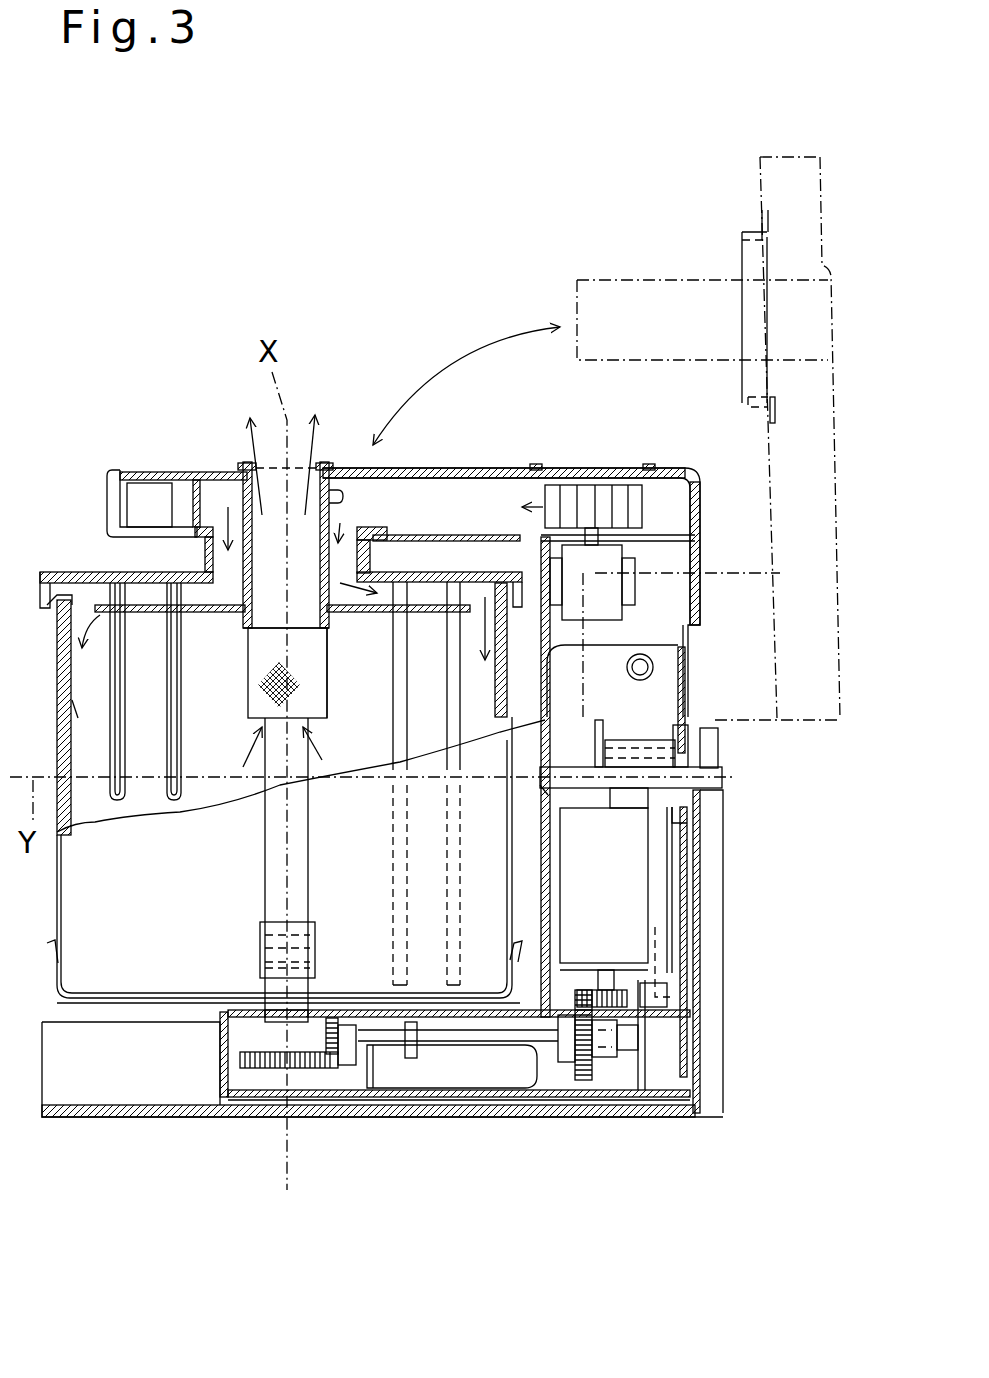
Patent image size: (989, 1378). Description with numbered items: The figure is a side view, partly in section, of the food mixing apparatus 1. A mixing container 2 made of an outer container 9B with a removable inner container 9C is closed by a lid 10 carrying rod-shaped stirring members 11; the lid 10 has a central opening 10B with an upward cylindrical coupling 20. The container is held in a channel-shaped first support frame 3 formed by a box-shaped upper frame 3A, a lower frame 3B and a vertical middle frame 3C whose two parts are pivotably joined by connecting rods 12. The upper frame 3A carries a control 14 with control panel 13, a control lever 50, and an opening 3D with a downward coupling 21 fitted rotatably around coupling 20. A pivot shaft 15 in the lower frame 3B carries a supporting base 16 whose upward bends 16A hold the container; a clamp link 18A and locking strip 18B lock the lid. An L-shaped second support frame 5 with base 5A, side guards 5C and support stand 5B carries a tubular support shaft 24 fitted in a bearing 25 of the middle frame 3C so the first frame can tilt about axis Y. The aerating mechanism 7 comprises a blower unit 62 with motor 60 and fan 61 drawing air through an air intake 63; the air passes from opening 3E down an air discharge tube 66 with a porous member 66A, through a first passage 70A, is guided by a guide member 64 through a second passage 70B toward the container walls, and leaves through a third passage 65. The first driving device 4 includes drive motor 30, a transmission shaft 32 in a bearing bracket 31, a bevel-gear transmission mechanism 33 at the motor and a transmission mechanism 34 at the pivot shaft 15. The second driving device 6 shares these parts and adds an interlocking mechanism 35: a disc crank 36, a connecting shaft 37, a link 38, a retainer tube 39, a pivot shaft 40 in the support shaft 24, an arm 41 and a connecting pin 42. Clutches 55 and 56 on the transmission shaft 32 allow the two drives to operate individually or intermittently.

The food mixing apparatus 1 is at (230, 313).
The mixing container 2 is at (163, 977).
The first support frame 3 is at (180, 463).
The upper frame 3A is at (480, 467).
The lower frame 3B is at (445, 1100).
The middle frame 3C is at (700, 855).
The opening 3D is at (367, 520).
The opening 3E is at (323, 467).
The first driving device 4 is at (550, 1060).
The second support frame 5 is at (548, 1118).
The base 5A is at (600, 1117).
The support stand 5B is at (712, 1063).
The guards 5C is at (62, 1090).
The second driving device 6 is at (675, 952).
The aerating mechanism 7 is at (660, 498).
The outer container 9B is at (60, 690).
The inner container 9C is at (75, 718).
The lid 10 is at (67, 572).
The opening 10B is at (247, 670).
The stirring members 11 is at (165, 795).
The connecting rods 12 is at (650, 667).
The control panel 13 is at (110, 503).
The control 14 is at (152, 507).
The pivot shaft 15 is at (277, 1027).
The supporting base 16 is at (108, 1003).
The upward bends 16A is at (57, 963).
The clamp link 18A is at (263, 940).
The locking strip 18B is at (277, 855).
The cylindrical coupling 20 is at (385, 575).
The cylindrical coupling 21 is at (378, 600).
The tubular support shaft 24 is at (720, 748).
The bearing 25 is at (690, 823).
The drive motor 30 is at (626, 908).
The bearing bracket 31 is at (380, 1067).
The transmission shaft 32 is at (490, 1043).
The transmission mechanism 33 is at (600, 1057).
The transmission mechanism 34 is at (330, 1072).
The interlocking mechanism 35 is at (687, 897).
The disc crank 36 is at (647, 1028).
The connecting shaft 37 is at (672, 925).
The link 38 is at (667, 985).
The retainer tube 39 is at (640, 737).
The pivot shaft 40 is at (545, 790).
The arm 41 is at (597, 750).
The connecting pin 42 is at (608, 735).
The control lever 50 is at (232, 505).
The clutch 55 is at (411, 1058).
The clutch 56 is at (640, 1040).
The motor 60 is at (612, 605).
The fan 61 is at (603, 495).
The blower unit 62 is at (640, 553).
The air intake 63 is at (645, 465).
The guide member 64 is at (228, 612).
The third passage 65 is at (304, 568).
The air discharge tube 66 is at (327, 618).
The porous member 66A is at (318, 693).
The first passage 70A is at (213, 560).
The second passage 70B is at (417, 593).